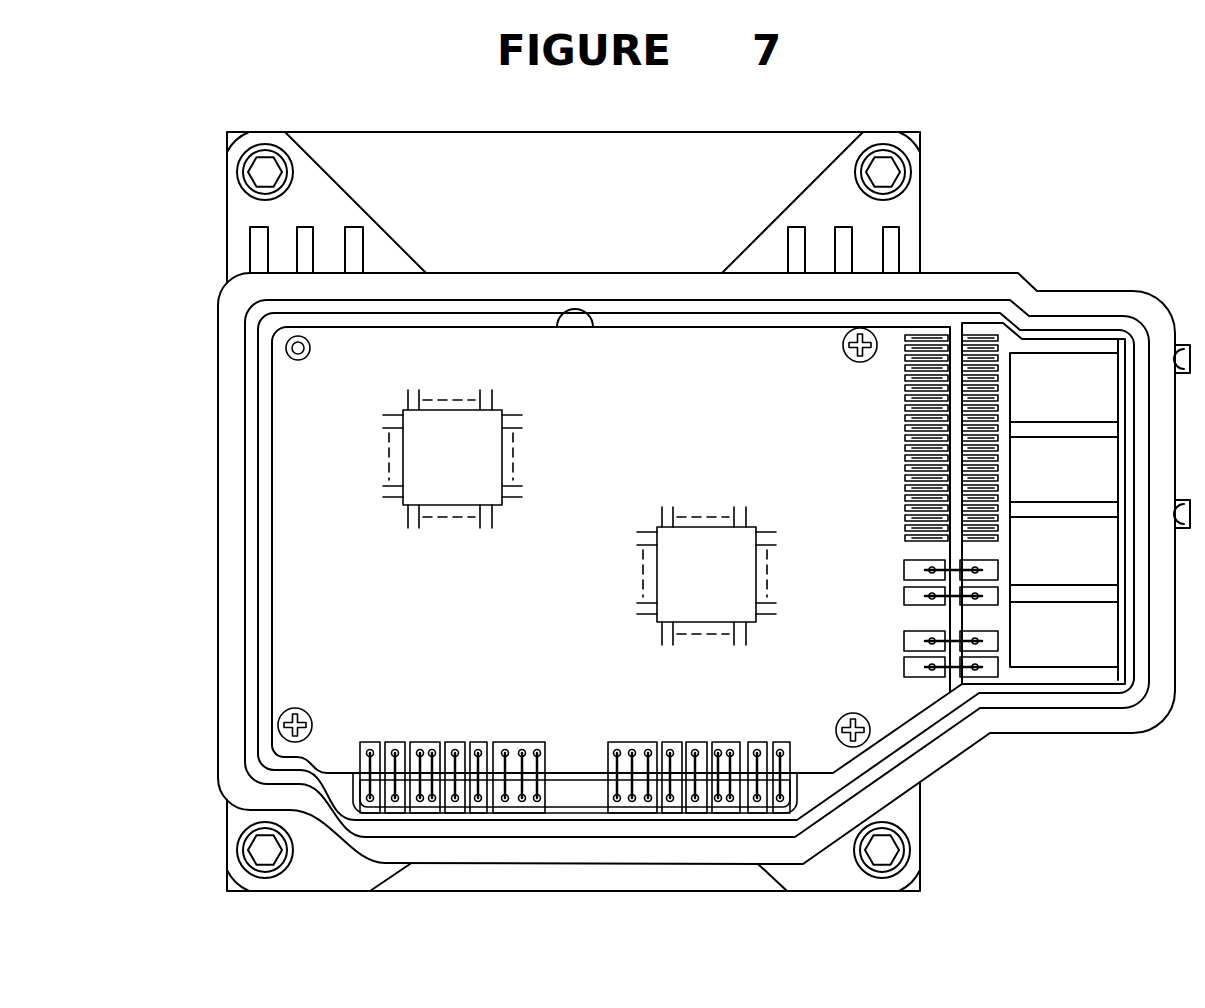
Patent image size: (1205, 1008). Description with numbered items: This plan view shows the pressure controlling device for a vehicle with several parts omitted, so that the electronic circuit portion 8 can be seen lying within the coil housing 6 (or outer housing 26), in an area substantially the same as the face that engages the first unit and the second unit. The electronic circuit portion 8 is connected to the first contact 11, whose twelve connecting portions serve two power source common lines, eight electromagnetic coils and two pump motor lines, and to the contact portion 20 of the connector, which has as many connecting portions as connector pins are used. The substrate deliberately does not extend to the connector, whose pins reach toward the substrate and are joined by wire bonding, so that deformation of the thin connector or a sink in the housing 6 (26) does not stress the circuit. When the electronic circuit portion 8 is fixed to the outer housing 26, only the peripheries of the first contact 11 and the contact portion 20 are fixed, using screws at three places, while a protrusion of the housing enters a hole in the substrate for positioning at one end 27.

The coil housing 6 is at (704, 533).
The outer housing 26 is at (1040, 290).
The positioning end 27 is at (287, 345).
The first contact 11 is at (300, 788).
The electronic circuit portion 8 is at (890, 700).
The contact portion of connector 20 is at (988, 677).